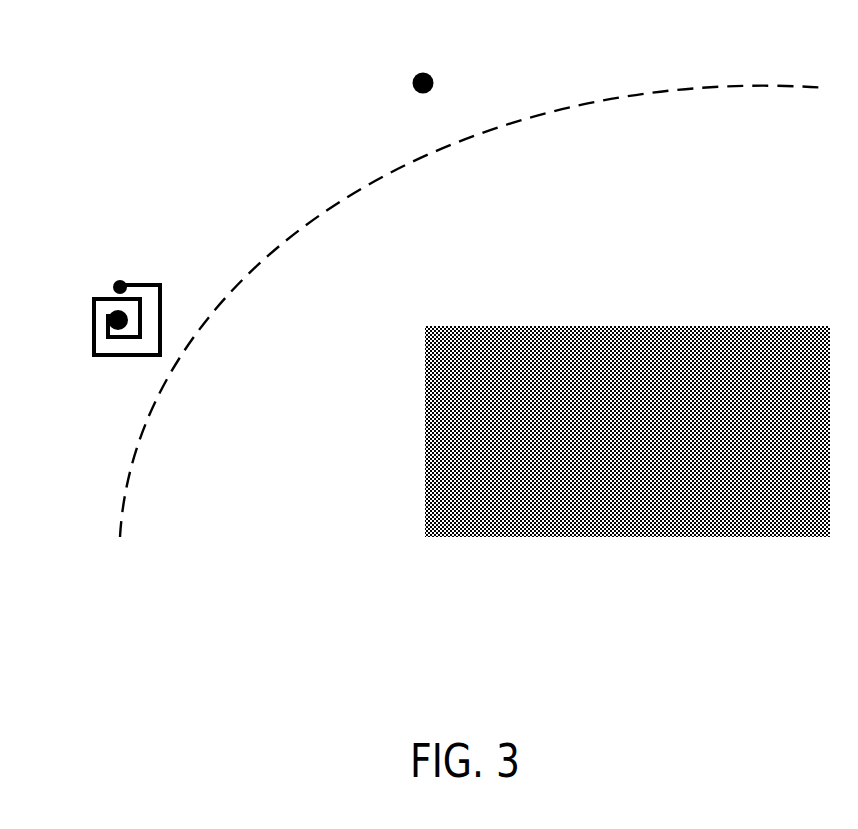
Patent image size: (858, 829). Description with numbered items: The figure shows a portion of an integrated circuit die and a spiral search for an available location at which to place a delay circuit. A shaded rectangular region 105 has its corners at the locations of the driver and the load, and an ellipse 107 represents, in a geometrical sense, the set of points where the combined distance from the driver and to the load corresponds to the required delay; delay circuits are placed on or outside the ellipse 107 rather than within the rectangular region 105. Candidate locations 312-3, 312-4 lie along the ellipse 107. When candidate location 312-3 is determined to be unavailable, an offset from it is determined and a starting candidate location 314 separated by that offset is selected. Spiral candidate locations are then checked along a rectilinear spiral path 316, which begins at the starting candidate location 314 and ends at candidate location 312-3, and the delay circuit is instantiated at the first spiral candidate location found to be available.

The shaded rectangular region 105 is at (628, 324).
The ellipse 107 is at (332, 203).
The candidate location 312-3 is at (112, 312).
The candidate location 312-4 is at (427, 72).
The starting candidate location 314 is at (122, 280).
The rectilinear spiral path 316 is at (163, 317).